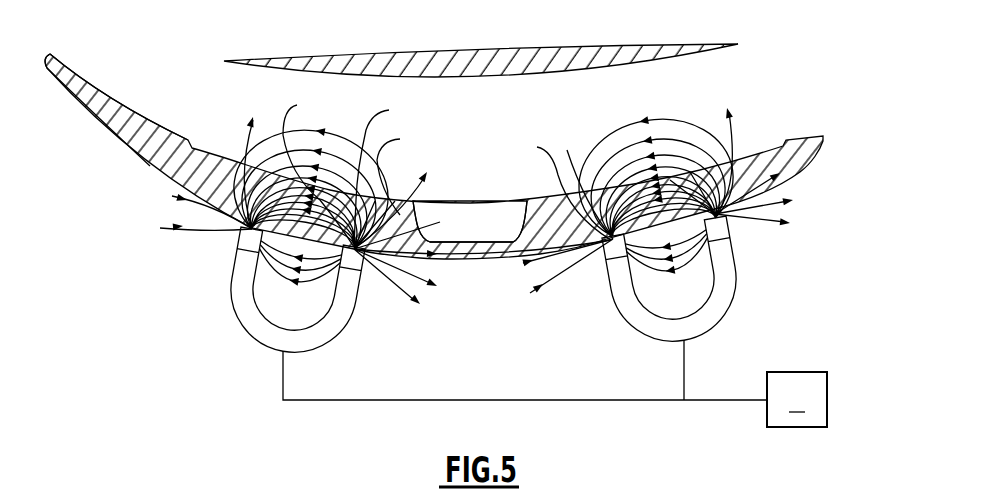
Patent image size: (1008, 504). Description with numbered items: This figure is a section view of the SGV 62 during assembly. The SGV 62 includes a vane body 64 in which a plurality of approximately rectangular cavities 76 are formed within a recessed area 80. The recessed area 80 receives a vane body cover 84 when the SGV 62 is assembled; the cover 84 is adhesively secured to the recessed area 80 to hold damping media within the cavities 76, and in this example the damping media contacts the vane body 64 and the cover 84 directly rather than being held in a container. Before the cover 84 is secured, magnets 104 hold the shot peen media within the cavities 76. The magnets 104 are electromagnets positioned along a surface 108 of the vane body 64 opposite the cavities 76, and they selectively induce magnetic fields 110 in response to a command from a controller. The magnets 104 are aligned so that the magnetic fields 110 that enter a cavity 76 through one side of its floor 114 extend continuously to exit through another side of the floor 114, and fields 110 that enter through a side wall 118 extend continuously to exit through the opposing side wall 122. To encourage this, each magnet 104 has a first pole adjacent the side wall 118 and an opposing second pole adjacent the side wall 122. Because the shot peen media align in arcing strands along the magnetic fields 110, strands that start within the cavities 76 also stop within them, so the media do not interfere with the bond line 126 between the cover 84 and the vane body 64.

The SGV 62 is at (801, 63).
The vane body 64 is at (127, 125).
The cavities 76 is at (488, 165).
The recessed area 80 is at (210, 157).
The vane body cover 84 is at (484, 60).
The magnets 104 is at (330, 333).
The surface 108 is at (493, 257).
The magnetic fields 110 is at (251, 106).
The floor 114 is at (390, 170).
The side wall 118 is at (407, 169).
The opposing side wall 122 is at (318, 168).
The bond line 126 is at (555, 187).